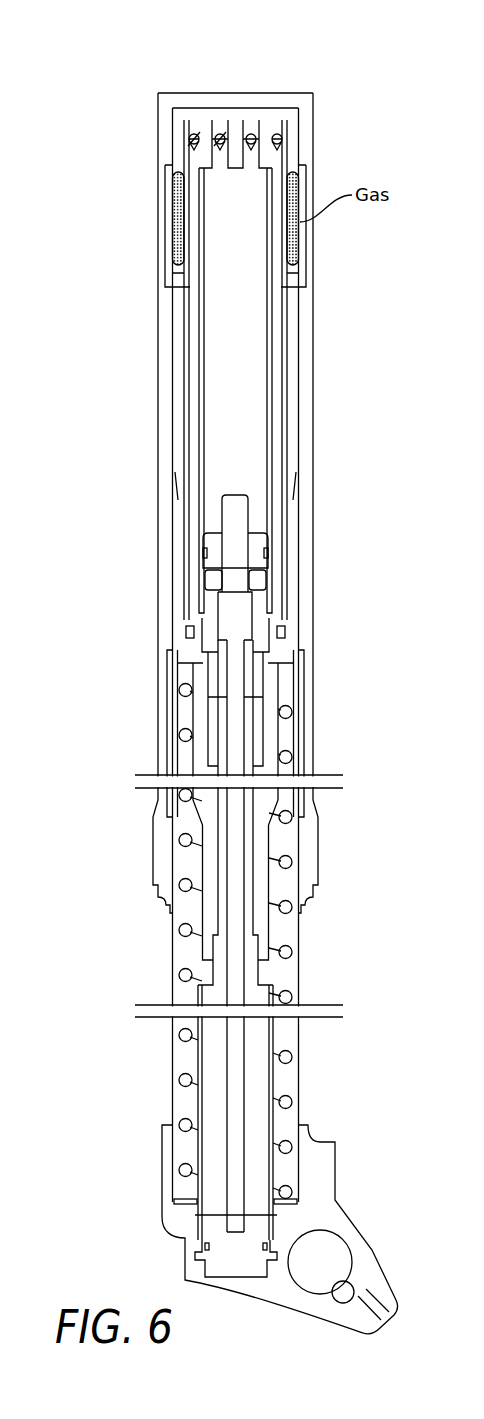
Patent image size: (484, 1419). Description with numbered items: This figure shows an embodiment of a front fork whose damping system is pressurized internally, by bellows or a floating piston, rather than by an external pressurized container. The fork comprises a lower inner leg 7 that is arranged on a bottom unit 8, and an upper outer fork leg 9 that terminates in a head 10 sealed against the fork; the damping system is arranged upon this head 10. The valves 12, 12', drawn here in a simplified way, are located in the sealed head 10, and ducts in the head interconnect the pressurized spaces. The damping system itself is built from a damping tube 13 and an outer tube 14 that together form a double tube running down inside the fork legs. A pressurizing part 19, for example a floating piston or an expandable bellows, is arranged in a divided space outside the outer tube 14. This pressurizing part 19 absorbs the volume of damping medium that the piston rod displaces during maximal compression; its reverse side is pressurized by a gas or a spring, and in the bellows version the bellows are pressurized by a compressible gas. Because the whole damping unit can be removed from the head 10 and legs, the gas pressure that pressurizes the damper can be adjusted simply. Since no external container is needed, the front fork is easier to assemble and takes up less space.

The lower inner leg 7 is at (172, 958).
The bottom unit 8 is at (335, 1177).
The upper outer fork leg 9 is at (158, 400).
The head 10 is at (158, 150).
The valve 12 is at (235, 102).
The valve 12' is at (235, 87).
The damping tube 13 is at (198, 357).
The outer tube 14 is at (184, 467).
The pressurizing part 19 is at (165, 190).